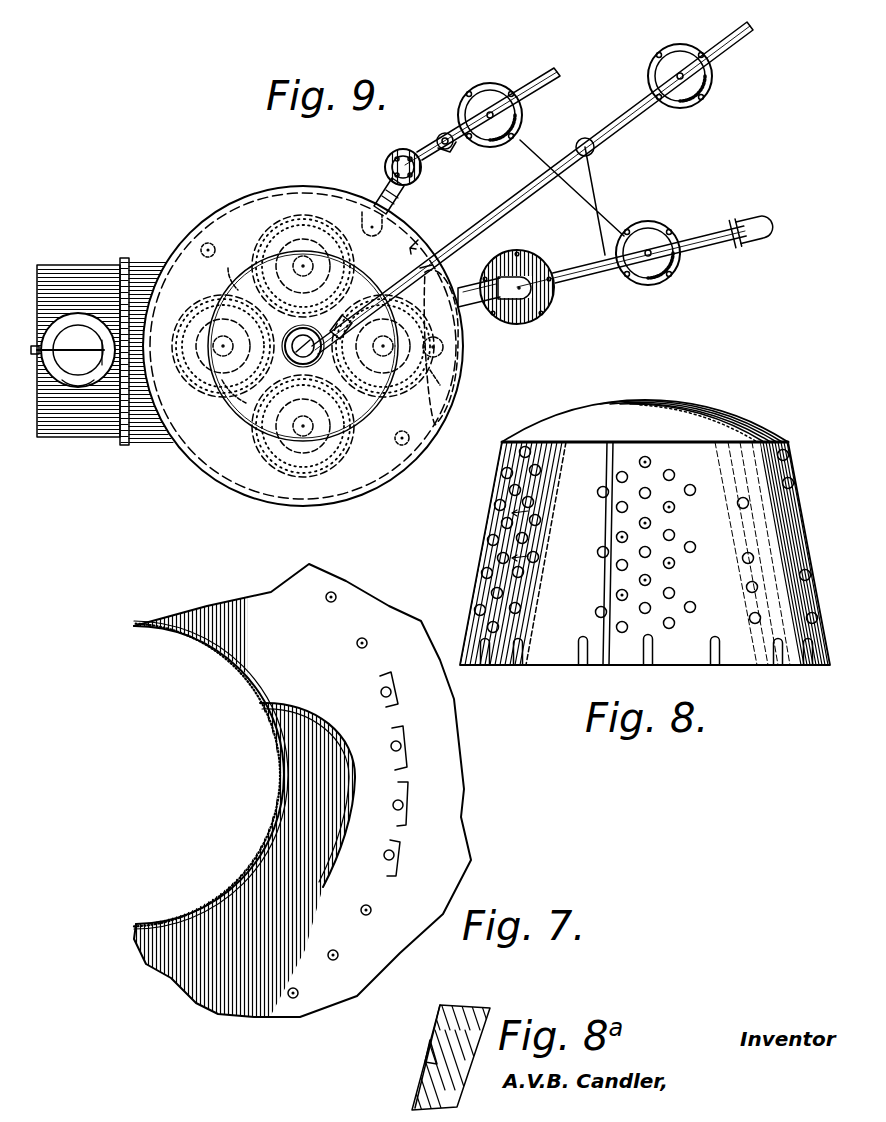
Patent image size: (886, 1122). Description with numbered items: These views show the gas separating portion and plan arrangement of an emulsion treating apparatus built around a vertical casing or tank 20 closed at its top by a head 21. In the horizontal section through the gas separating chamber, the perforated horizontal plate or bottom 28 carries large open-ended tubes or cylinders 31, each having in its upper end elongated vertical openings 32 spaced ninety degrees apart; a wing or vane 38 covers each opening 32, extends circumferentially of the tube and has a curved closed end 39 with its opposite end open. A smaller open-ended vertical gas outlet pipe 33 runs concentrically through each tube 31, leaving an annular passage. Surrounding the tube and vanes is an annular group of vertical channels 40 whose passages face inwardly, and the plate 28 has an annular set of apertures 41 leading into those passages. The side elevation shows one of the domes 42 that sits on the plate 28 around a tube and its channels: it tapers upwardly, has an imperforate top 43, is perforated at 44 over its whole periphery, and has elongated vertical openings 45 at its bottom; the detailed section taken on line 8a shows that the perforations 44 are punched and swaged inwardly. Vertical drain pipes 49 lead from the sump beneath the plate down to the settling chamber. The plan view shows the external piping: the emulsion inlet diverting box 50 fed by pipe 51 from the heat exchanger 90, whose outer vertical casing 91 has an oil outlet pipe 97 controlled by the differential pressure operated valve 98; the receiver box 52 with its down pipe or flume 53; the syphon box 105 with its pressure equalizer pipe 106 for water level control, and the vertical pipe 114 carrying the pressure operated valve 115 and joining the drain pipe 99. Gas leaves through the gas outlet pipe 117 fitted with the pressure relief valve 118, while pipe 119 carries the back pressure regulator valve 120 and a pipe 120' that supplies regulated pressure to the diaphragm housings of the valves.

In FIG. 9, the vertical casing or tank 20 is at (402, 458).
In FIG. 9, the top head 21 is at (232, 458).
In FIG. 9, the vertical drain pipes 49 is at (207, 243).
In FIG. 9, the vertical gas outlet pipes 33 is at (303, 345).
In FIG. 9, the imperforate top 43 is at (256, 446).
In FIG. 8, the imperforate top 43 is at (780, 416).
In FIG. 9, the domes 42 is at (258, 262).
In FIG. 8, the domes 42 is at (552, 455).
In FIG. 8A, the domes 42 is at (438, 1022).
In FIG. 9, the tubes or cylinders 31 is at (355, 350).
In FIG. 7, the tubes or cylinders 31 is at (245, 872).
In FIG. 9, the perforations 44 is at (319, 338).
In FIG. 8, the perforations 44 is at (503, 542).
In FIG. 8A, the perforations 44 is at (420, 1070).
In FIG. 9, the pressure relief valve 118 is at (296, 356).
In FIG. 9, the gas outlet pipe 117 is at (329, 361).
In FIG. 9, the emulsion inlet diverting box or nozzle 50 is at (442, 274).
In FIG. 9, the vertical down pipe or flume 53 is at (445, 347).
In FIG. 9, the receiver box 52 is at (446, 380).
In FIG. 9, the pipe 119 is at (515, 195).
In FIG. 9, the back pressure regulator valve 120 is at (711, 76).
In FIG. 9, the pipe 120' is at (590, 196).
In FIG. 9, the drain pipe 99 is at (556, 84).
In FIG. 9, the pressure operated valve 115 is at (514, 118).
In FIG. 9, the vertical pipe 114 is at (446, 154).
In FIG. 9, the syphon box 105 is at (386, 161).
In FIG. 9, the pressure equalizer pipe 106 is at (378, 186).
In FIG. 9, the pipe 51 is at (470, 310).
In FIG. 9, the heat exchanger 90 is at (540, 318).
In FIG. 9, the outer vertical casing 91 is at (545, 300).
In FIG. 9, the oil outlet pipe 97 is at (575, 264).
In FIG. 9, the differential pressure operated valve 98 is at (650, 285).
In FIG. 8, the elongated vertical openings 45 is at (808, 667).
In FIG. 8, the section line 8a— 8a is at (538, 535).
In FIG. 7, the horizontal plate or bottom 28 is at (464, 806).
In FIG. 7, the elongated vertical openings 32 is at (150, 637).
In FIG. 7, the wing or vane 38 is at (345, 835).
In FIG. 7, the curved closed end 39 is at (300, 714).
In FIG. 7, the vertical channels 40 is at (404, 700).
In FIG. 7, the apertures 41 is at (405, 750).